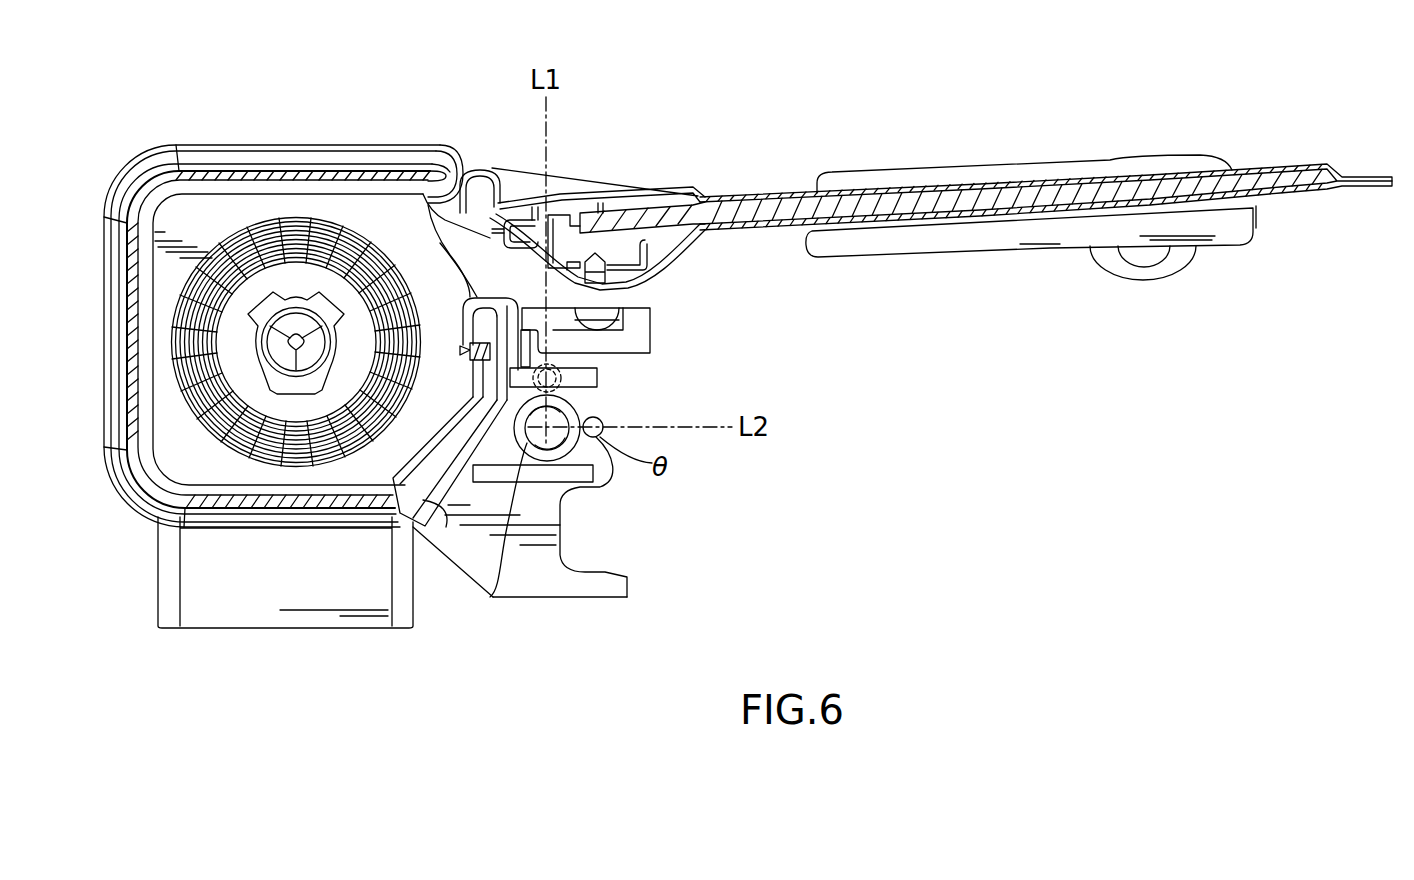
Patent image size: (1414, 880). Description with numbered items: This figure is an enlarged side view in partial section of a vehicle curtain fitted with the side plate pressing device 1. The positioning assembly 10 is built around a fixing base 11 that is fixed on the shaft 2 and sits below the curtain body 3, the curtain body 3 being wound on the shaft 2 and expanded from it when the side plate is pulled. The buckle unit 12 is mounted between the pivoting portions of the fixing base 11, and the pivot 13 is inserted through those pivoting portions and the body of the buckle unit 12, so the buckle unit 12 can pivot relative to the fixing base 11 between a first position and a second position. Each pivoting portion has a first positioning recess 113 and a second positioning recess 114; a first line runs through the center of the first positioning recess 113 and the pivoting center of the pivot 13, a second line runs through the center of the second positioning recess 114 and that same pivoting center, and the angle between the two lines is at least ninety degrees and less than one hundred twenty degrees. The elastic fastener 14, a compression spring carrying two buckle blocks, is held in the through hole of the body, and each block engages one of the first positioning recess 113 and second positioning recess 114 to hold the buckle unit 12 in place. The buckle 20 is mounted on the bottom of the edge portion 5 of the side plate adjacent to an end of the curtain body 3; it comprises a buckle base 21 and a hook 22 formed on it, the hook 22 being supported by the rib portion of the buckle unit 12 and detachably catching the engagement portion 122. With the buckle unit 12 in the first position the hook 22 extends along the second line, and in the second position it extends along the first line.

The side plate pressing device 1 is at (586, 603).
The shaft 2 is at (257, 132).
The curtain body 3 is at (373, 207).
The edge portion 5 is at (640, 196).
The positioning assembly 10 is at (598, 503).
The fixing base 11 is at (537, 599).
The buckle unit 12 is at (615, 386).
The pivot 13 is at (490, 600).
The elastic fastener 14 is at (521, 380).
The buckle 20 is at (652, 340).
The buckle base 21 is at (652, 291).
The hook 22 is at (633, 346).
The first positioning recess 113 is at (466, 300).
The second positioning recess 114 is at (600, 440).
The engagement portion 122 is at (551, 205).